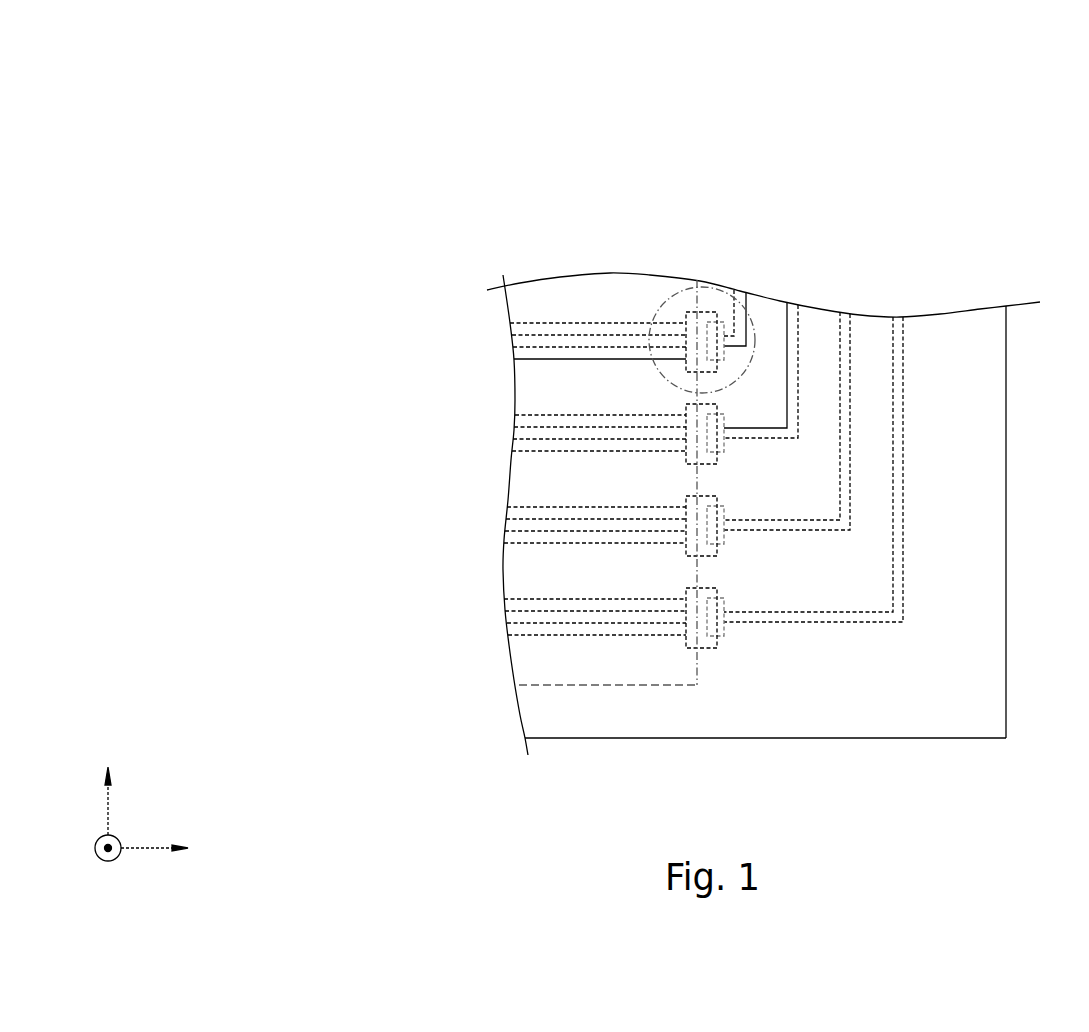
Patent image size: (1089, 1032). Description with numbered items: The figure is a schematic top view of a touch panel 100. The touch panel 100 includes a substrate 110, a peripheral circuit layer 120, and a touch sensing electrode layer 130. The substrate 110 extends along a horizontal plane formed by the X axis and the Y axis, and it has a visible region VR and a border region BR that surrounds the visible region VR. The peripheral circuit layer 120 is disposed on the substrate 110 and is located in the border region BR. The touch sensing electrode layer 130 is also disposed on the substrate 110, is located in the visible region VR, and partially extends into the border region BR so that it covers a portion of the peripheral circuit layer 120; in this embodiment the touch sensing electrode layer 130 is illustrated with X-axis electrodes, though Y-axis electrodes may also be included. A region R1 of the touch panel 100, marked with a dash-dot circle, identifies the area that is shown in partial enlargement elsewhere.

The touch panel 100 is at (163, 73).
The substrate 110 is at (980, 568).
The peripheral circuit layer 120 is at (897, 458).
The touch sensing electrode layer 130 is at (510, 323).
The region R1 is at (701, 288).
The visible region VR is at (506, 663).
The border region BR is at (533, 715).